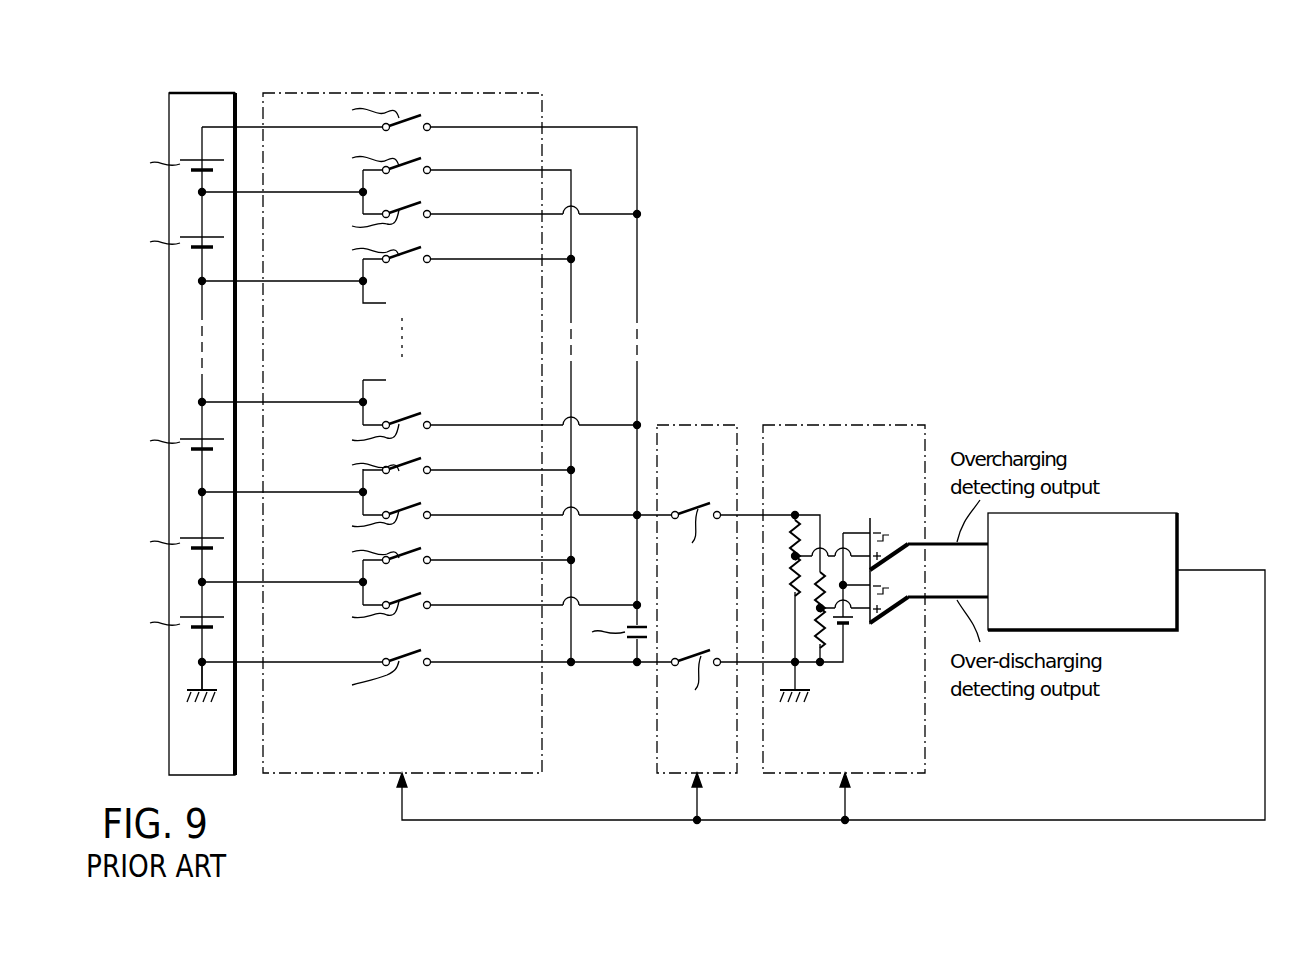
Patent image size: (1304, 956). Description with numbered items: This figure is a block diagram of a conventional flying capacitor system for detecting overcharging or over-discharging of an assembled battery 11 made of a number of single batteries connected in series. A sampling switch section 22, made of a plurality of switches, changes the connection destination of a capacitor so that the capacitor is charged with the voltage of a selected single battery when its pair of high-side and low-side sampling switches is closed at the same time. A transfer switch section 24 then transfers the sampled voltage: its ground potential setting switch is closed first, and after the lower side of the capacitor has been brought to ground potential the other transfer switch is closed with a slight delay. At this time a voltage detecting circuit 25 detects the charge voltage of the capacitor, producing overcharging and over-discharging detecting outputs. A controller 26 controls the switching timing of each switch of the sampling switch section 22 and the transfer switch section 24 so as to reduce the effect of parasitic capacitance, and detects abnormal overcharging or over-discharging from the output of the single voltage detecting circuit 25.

The assembled battery 11 is at (200, 92).
The sampling switch section 22 is at (404, 92).
The transfer switch section 24 is at (706, 424).
The voltage detecting circuit 25 is at (848, 424).
The controller 26 is at (1141, 512).